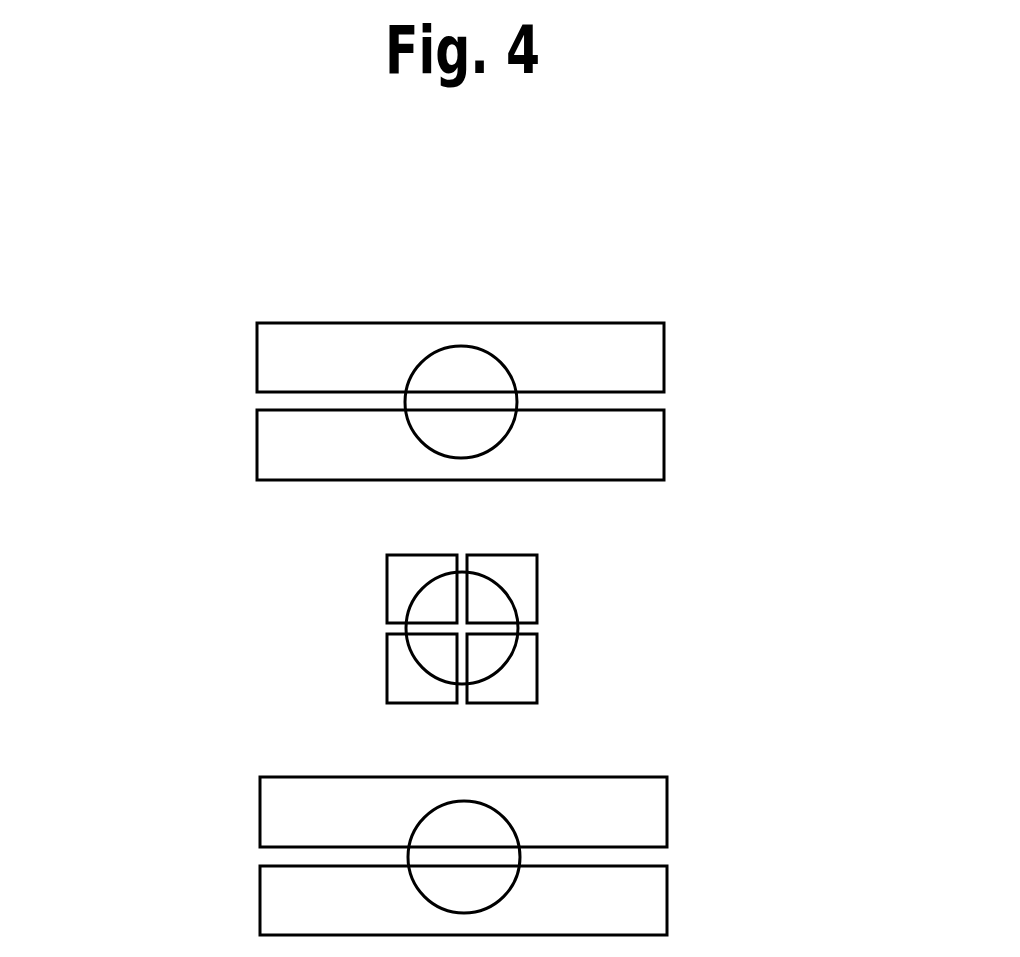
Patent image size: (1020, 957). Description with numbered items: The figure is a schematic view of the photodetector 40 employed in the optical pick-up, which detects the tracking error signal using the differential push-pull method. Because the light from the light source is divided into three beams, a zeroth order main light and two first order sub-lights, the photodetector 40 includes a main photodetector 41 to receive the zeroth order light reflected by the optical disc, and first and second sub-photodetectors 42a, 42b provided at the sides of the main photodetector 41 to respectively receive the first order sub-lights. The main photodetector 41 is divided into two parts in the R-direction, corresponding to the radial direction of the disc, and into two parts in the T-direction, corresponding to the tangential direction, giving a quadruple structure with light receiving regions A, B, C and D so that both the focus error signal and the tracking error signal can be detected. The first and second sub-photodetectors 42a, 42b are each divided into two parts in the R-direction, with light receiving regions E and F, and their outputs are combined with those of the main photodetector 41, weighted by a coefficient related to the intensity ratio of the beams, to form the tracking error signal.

The photodetector 40 is at (172, 313).
The main photodetector 41 is at (566, 633).
The first sub-photodetector 42a is at (706, 409).
The second sub-photodetector 42b is at (709, 864).